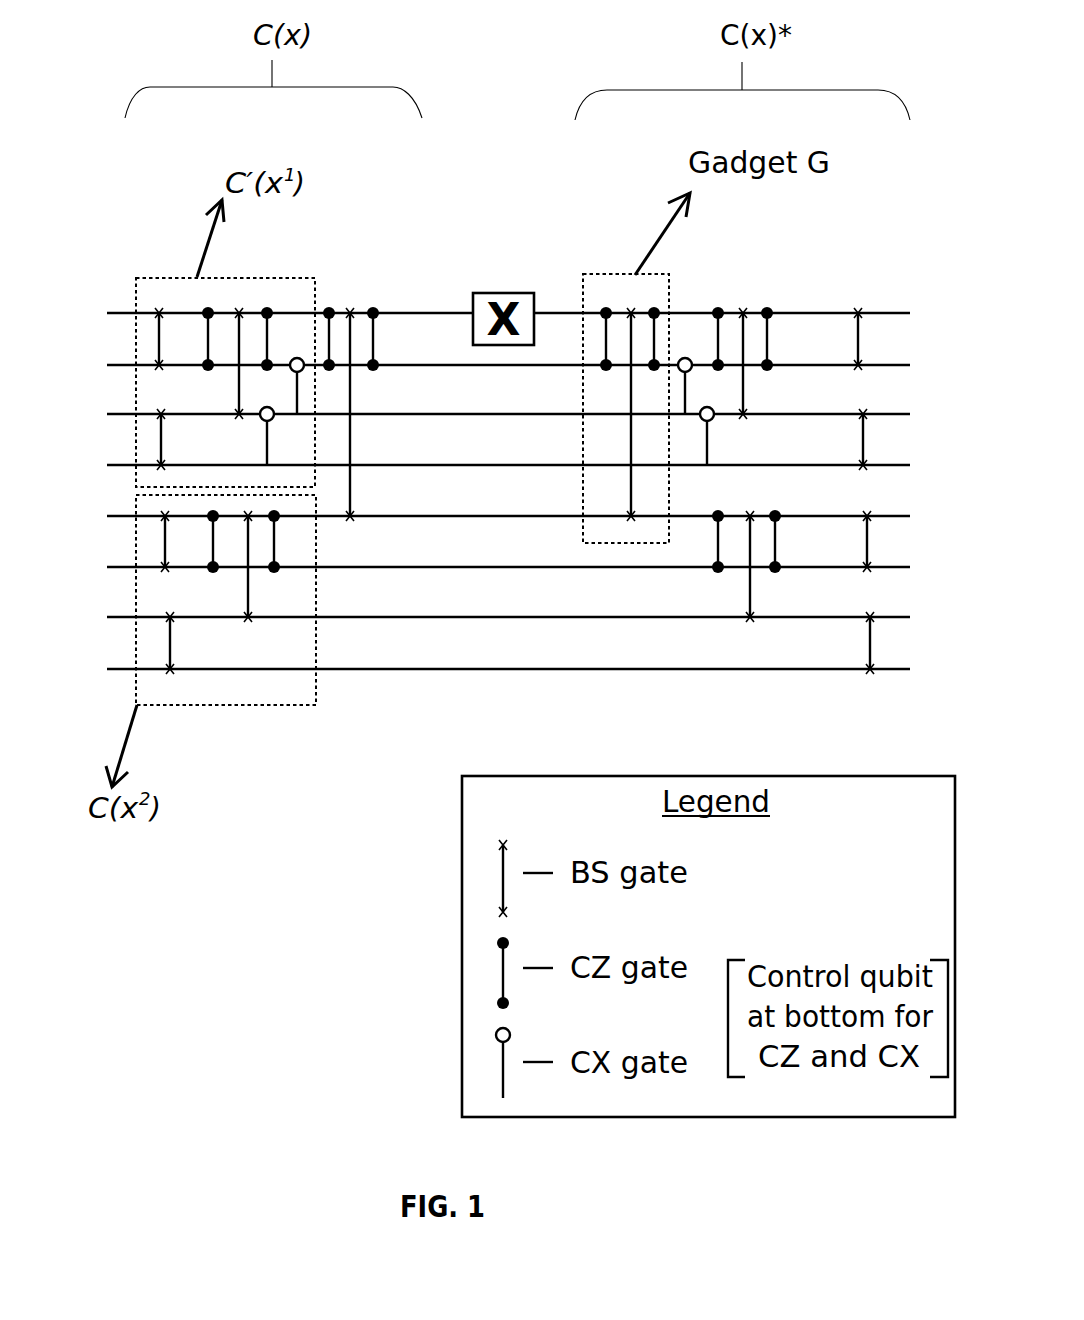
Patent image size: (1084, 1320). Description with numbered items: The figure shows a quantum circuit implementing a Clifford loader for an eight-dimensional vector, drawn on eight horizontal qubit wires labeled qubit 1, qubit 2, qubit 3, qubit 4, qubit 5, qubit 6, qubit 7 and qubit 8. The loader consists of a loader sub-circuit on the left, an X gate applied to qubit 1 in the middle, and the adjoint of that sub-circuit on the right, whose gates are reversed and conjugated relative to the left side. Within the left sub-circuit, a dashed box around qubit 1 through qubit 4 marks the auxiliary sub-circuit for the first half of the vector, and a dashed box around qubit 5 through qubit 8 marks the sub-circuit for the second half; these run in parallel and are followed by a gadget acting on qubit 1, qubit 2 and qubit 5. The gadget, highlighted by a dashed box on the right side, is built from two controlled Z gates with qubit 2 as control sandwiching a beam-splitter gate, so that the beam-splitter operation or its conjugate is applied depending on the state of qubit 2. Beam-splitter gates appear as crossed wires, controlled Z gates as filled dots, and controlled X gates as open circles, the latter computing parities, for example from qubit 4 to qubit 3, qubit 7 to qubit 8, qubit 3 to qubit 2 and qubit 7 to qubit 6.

The qubit 1 is at (476, 306).
The qubit 2 is at (476, 358).
The qubit 3 is at (476, 407).
The qubit 4 is at (476, 458).
The qubit 5 is at (476, 509).
The qubit 6 is at (476, 560).
The qubit 7 is at (476, 610).
The qubit 8 is at (476, 662).